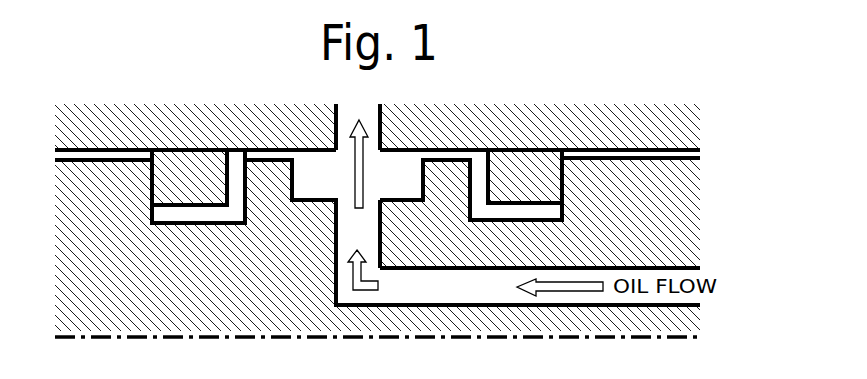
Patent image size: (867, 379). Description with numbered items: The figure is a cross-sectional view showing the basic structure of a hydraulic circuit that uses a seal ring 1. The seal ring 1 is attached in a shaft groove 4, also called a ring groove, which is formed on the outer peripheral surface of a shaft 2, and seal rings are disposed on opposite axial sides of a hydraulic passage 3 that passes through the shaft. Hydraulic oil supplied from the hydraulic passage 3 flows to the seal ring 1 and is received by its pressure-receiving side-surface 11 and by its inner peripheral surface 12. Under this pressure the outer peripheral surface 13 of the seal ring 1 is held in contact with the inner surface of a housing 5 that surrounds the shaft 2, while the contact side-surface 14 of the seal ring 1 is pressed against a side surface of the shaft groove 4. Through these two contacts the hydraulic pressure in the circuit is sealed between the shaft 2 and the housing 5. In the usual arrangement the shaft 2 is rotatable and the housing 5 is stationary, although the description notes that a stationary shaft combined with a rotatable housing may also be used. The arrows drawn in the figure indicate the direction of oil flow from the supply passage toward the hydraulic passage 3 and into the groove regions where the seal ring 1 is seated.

The seal ring 1 is at (178, 172).
The shaft 2 is at (377, 243).
The hydraulic passage 3 is at (345, 230).
The shaft groove 4 is at (232, 212).
The housing 5 is at (377, 127).
The pressure-receiving side-surface 11 is at (229, 185).
The inner peripheral surface 12 is at (207, 207).
The outer peripheral surface 13 is at (203, 148).
The contact side-surface 14 is at (151, 185).